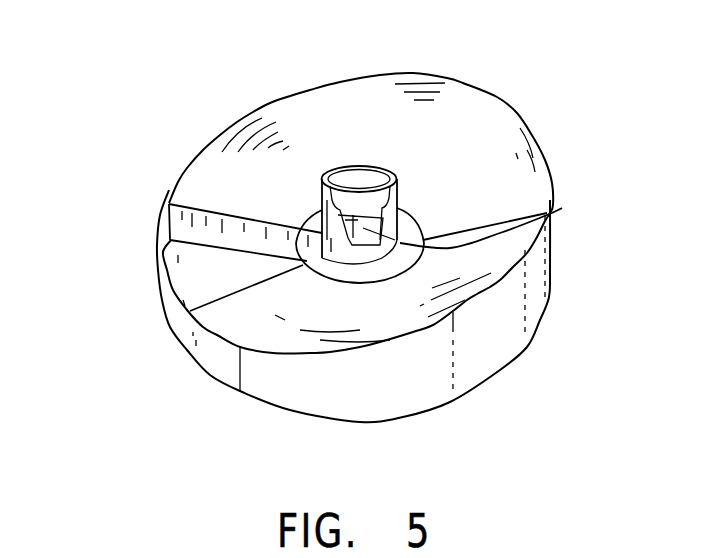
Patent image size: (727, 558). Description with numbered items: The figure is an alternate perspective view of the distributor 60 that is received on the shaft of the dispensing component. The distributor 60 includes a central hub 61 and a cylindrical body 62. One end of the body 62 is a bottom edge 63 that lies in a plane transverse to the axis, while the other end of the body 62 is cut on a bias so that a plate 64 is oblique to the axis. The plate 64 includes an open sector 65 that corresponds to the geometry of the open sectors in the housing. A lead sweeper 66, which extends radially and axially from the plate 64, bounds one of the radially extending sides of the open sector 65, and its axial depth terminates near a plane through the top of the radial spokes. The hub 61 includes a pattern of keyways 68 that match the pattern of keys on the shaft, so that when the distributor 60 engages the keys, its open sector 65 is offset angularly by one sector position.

The distributor 60 is at (565, 285).
The central hub 61 is at (372, 186).
The cylindrical body 62 is at (185, 338).
The bottom edge 63 is at (470, 393).
The plate 64 is at (362, 98).
The open sector 65 is at (200, 272).
The lead sweeper 66 is at (238, 223).
The keyways 68 is at (547, 213).